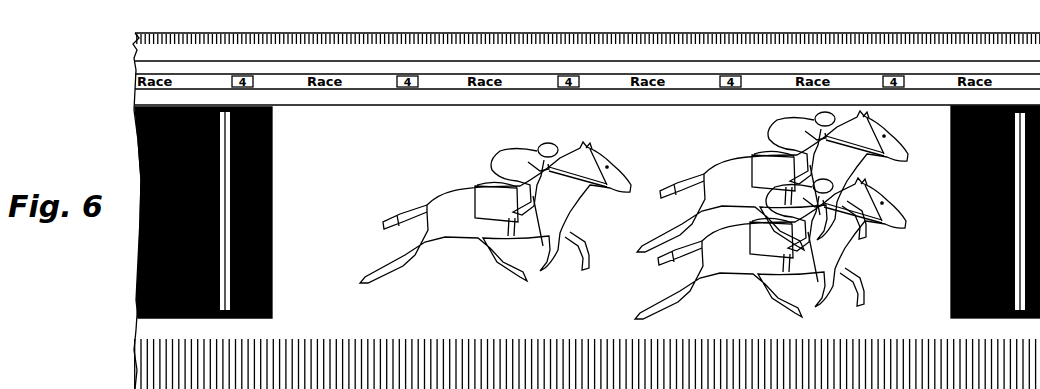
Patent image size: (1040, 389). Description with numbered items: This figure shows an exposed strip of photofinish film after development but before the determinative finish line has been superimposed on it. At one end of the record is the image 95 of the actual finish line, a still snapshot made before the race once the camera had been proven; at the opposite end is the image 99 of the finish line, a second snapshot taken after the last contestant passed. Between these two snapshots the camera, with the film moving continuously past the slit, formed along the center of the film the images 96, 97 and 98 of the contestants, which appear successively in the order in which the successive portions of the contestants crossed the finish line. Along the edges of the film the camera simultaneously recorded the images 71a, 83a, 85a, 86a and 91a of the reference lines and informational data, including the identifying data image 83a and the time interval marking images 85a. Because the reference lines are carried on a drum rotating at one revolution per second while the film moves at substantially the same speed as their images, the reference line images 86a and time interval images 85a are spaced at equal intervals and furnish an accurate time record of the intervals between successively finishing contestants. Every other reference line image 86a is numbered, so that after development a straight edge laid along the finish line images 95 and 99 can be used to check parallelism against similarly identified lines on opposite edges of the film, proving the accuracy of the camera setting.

The images of reference lines 86a is at (396, 33).
The images of time interval markings 85a is at (515, 63).
The image of informational data 71a is at (371, 91).
The image of informational data 91a is at (455, 94).
The image of identifying data 83a is at (505, 97).
The image of the finish line 99 is at (137, 320).
The image of the finish line 95 is at (957, 318).
The image of contestant 98 is at (608, 163).
The image of contestant 96 is at (885, 140).
The image of contestant 97 is at (885, 212).